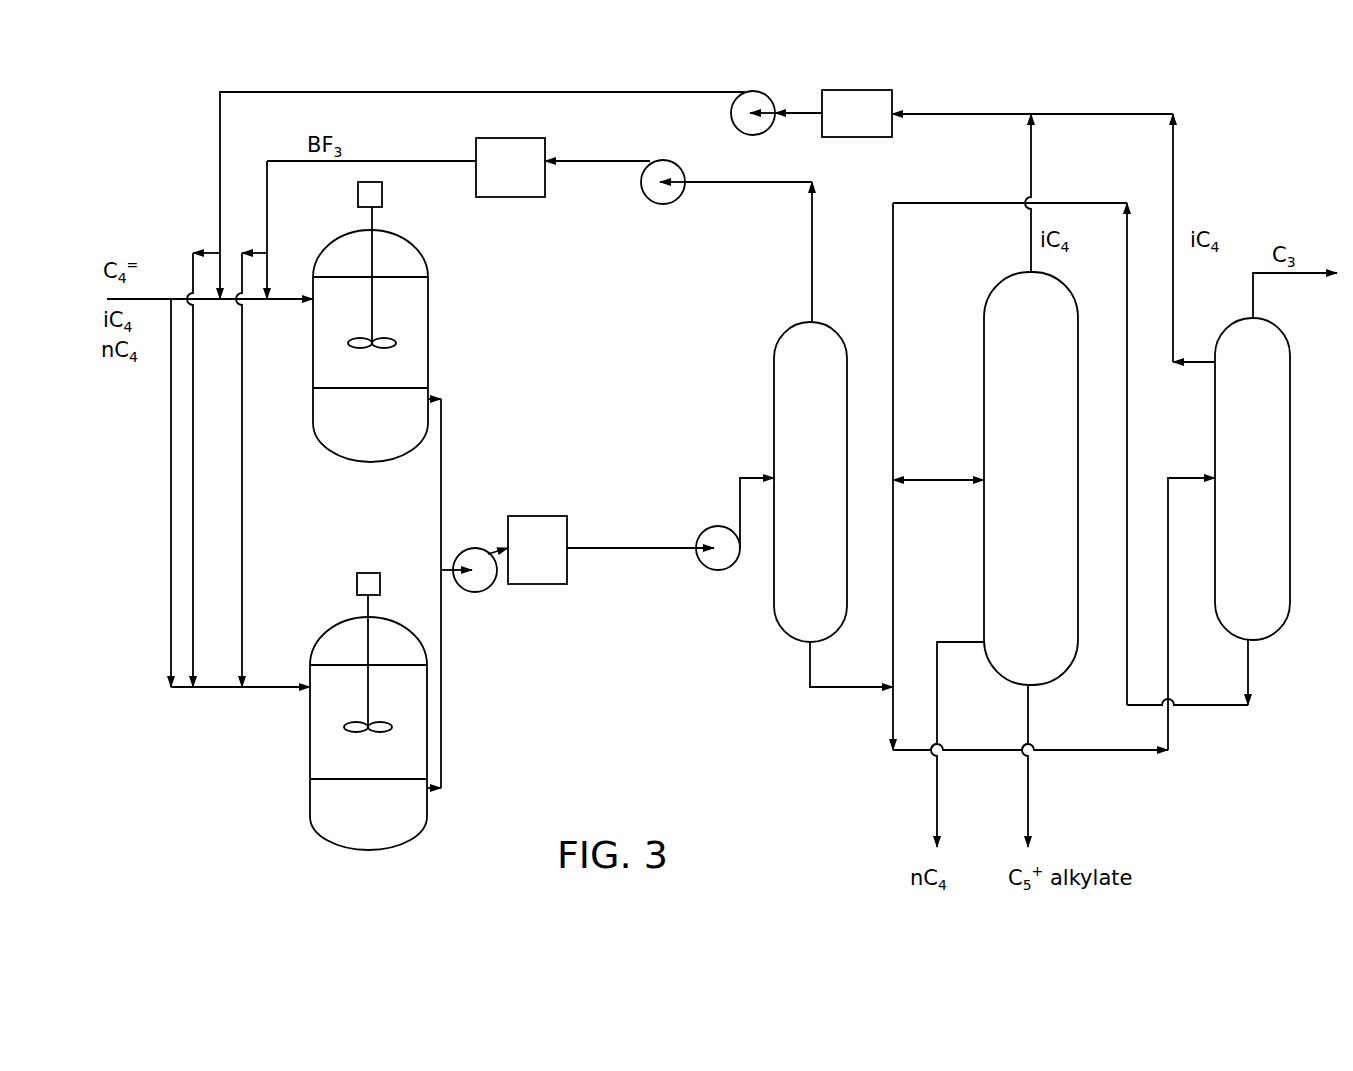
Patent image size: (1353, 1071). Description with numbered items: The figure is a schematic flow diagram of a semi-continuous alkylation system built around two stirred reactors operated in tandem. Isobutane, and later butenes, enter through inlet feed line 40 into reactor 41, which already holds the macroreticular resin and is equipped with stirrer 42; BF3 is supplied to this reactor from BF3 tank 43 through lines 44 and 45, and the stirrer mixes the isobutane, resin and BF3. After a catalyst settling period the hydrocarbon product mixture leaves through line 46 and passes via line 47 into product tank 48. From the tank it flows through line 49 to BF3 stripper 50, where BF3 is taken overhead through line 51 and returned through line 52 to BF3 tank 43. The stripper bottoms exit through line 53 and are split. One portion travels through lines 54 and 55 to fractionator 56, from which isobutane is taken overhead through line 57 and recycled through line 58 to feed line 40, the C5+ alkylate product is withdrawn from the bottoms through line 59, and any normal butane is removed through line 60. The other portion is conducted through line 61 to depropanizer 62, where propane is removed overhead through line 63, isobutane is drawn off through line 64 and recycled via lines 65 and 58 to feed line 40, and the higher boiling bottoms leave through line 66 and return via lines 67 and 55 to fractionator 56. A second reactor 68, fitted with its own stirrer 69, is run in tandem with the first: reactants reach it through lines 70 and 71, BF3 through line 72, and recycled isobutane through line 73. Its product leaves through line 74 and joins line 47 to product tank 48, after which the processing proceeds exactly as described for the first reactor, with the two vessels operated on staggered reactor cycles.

The inlet feed line 40 is at (178, 297).
The reactor 41 is at (313, 349).
The stirrer 42 is at (374, 218).
The BF3 tank 43 is at (493, 138).
The BF3 line 44 is at (365, 161).
The BF3 line 45 is at (267, 210).
The reactor withdrawal line 46 is at (445, 463).
The product line 47 is at (493, 548).
The product tank 48 is at (538, 515).
The stripper feed line 49 is at (628, 546).
The BF3 stripper 50 is at (774, 408).
The stripper overhead line 51 is at (813, 266).
The BF3 recycle line 52 is at (742, 186).
The stripper bottoms line 53 is at (806, 660).
The fractionator feed line 54 is at (895, 592).
The fractionator inlet line 55 is at (942, 481).
The fractionator 56 is at (984, 412).
The fractionator overhead line 57 is at (1033, 163).
The isobutane recycle line 58 is at (962, 118).
The alkylate product line 59 is at (1030, 719).
The normal butane line 60 is at (933, 807).
The depropanizer feed line 61 is at (890, 718).
The depropanizer 62 is at (1290, 503).
The propane overhead line 63 is at (1255, 297).
The depropanizer isobutane line 64 is at (1197, 370).
The isobutane recycle line 65 is at (1175, 198).
The depropanizer bottoms line 66 is at (1250, 673).
The bottoms recycle line 67 is at (1124, 575).
The second reactor 68 is at (310, 750).
The stirrer 69 is at (368, 602).
The reactant line 70 is at (171, 563).
The reactant line 71 is at (214, 692).
The BF3 line 72 is at (242, 563).
The isobutane recycle line 73 is at (193, 563).
The second reactor product line 74 is at (443, 675).